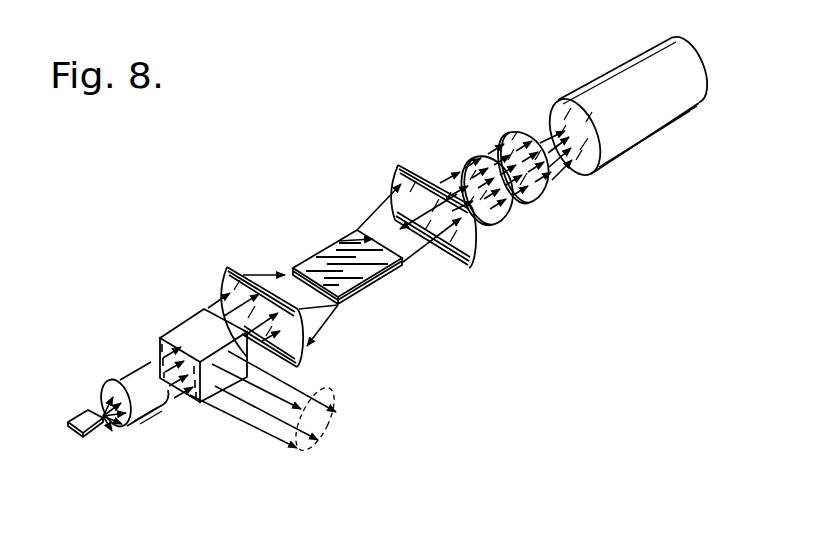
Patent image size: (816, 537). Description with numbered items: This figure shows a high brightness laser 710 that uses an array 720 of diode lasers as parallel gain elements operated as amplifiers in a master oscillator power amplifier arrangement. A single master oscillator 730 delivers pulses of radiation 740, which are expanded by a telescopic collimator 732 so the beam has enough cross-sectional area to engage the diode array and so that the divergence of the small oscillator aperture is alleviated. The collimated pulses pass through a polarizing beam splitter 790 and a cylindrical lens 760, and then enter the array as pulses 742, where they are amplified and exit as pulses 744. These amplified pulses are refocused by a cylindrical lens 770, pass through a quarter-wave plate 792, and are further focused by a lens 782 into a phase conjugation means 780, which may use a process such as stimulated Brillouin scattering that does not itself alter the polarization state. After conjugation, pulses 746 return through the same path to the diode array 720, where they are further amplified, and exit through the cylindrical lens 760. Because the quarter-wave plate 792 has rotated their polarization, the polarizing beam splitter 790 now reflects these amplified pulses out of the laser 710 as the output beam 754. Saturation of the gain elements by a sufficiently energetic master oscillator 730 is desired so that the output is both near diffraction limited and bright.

The laser 710 is at (392, 264).
The array of diode lasers 720 is at (347, 278).
The master oscillator 730 is at (86, 444).
The collimator 732 is at (153, 423).
The pulses of radiation 740 is at (117, 428).
The pulses 742 is at (338, 306).
The pulses 744 is at (435, 261).
The pulses 746 is at (526, 173).
The output beam 754 is at (348, 408).
The cylindrical lens 760 is at (226, 262).
The cylindrical lens 770 is at (473, 252).
The phase conjugation means 780 is at (676, 38).
The lens 782 is at (549, 201).
The polarizing beam splitter 790 is at (173, 322).
The quarter-wave plate 792 is at (511, 228).